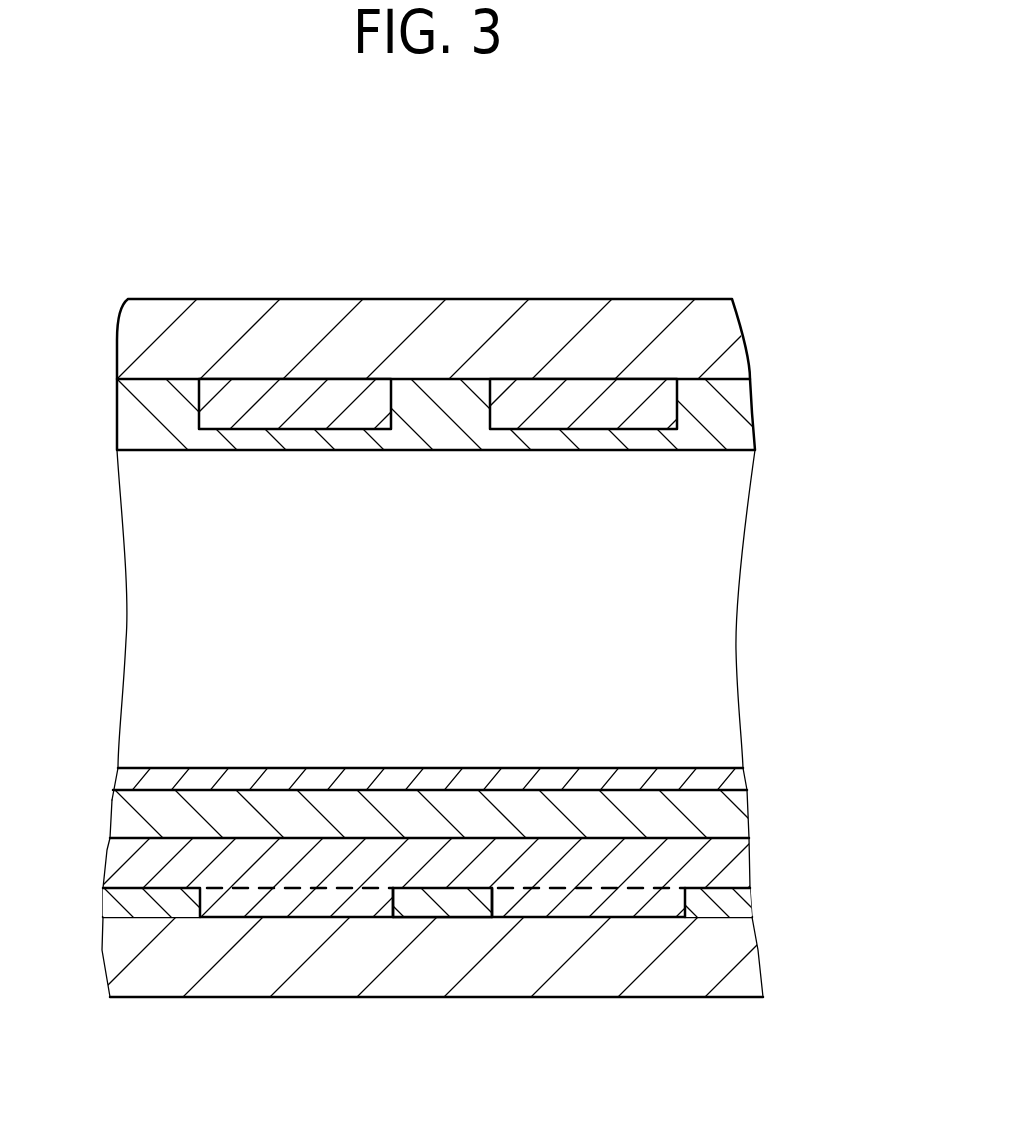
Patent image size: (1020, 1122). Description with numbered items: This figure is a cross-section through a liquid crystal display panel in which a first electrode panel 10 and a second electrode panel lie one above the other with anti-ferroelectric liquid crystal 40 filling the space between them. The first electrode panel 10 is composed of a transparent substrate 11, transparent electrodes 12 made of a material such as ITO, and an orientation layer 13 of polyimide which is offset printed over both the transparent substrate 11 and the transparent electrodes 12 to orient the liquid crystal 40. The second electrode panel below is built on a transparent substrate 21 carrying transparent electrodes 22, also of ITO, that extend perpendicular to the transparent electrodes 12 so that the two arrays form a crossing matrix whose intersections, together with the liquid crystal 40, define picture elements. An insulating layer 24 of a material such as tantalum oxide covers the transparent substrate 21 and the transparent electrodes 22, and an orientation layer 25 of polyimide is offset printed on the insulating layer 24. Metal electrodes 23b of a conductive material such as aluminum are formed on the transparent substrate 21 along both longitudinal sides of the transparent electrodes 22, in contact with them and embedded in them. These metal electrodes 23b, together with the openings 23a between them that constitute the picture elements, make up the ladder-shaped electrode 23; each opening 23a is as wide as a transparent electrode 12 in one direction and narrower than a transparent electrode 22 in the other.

The first electrode panel 10 is at (742, 266).
The transparent substrate 11 is at (722, 327).
The transparent electrodes 12 is at (590, 390).
The orientation layer 13 is at (737, 417).
The anti-ferroelectric liquid crystal 40 is at (715, 590).
The orientation layer 25 is at (720, 773).
The insulating layer 24 is at (722, 817).
The transparent electrodes 22 is at (723, 865).
The transparent substrate 21 is at (750, 973).
The ladder-shaped electrode 23 is at (150, 910).
The openings 23a is at (396, 912).
The metal electrodes 23b is at (443, 902).